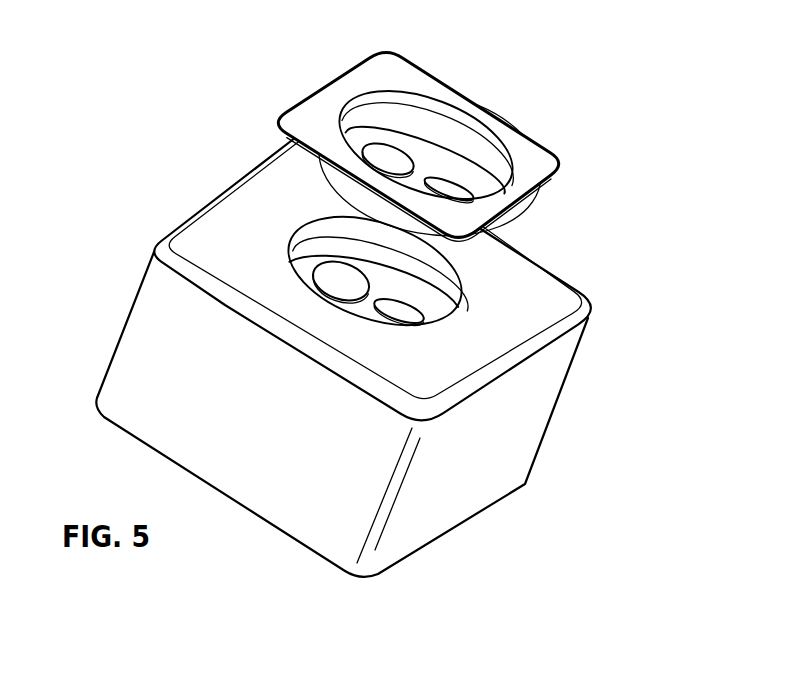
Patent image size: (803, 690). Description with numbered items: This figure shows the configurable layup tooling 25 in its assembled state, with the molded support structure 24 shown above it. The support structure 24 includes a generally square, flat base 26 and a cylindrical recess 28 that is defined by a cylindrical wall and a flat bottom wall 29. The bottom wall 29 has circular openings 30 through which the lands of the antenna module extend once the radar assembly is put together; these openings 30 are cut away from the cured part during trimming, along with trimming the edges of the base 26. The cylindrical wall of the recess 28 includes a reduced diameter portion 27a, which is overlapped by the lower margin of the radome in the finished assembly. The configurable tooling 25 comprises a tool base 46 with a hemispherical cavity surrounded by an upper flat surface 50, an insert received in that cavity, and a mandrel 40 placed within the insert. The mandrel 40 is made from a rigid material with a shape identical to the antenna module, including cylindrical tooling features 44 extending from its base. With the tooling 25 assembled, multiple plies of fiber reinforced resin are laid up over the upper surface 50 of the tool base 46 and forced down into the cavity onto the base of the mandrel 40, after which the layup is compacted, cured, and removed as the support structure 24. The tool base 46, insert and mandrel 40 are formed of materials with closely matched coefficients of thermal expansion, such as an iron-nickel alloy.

The support structure 24 is at (370, 78).
The configurable tooling 25 is at (536, 506).
The base 26 is at (542, 168).
The reduced diameter portion 27a is at (323, 190).
The cylindrical recess 28 is at (479, 130).
The bottom wall 29 is at (366, 138).
The circular openings 30 is at (444, 184).
The mandrel 40 is at (387, 288).
The cylindrical tooling features 44 is at (407, 316).
The tool base 46 is at (147, 347).
The upper flat surface 50 is at (212, 236).